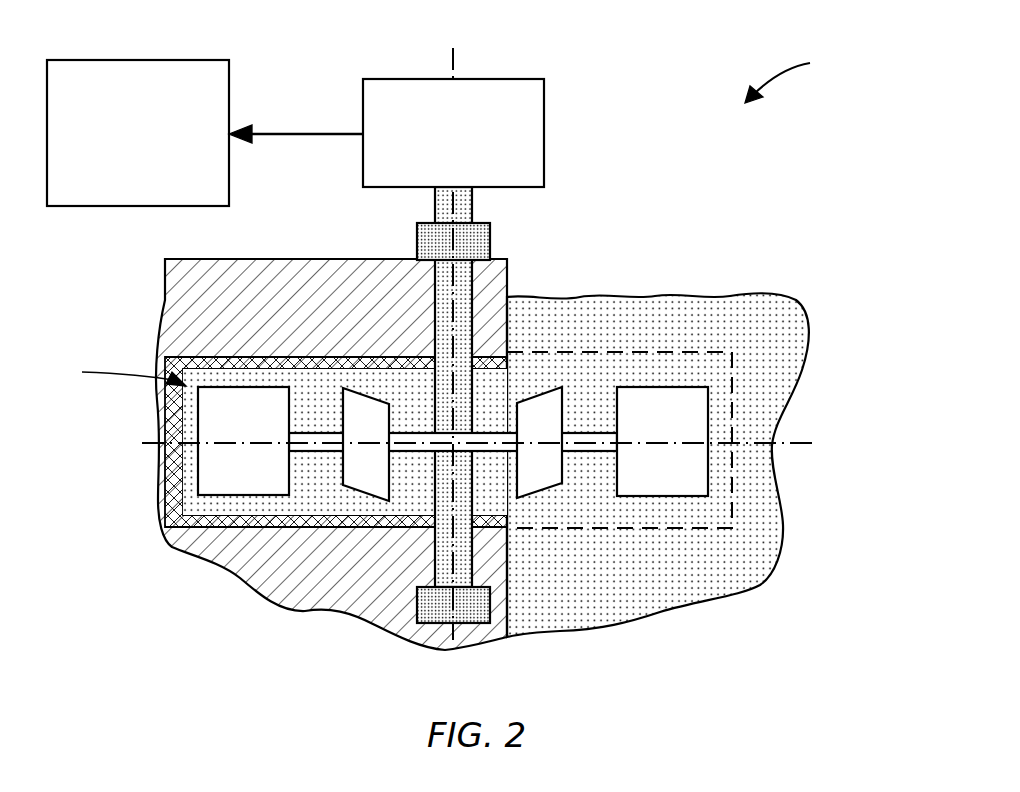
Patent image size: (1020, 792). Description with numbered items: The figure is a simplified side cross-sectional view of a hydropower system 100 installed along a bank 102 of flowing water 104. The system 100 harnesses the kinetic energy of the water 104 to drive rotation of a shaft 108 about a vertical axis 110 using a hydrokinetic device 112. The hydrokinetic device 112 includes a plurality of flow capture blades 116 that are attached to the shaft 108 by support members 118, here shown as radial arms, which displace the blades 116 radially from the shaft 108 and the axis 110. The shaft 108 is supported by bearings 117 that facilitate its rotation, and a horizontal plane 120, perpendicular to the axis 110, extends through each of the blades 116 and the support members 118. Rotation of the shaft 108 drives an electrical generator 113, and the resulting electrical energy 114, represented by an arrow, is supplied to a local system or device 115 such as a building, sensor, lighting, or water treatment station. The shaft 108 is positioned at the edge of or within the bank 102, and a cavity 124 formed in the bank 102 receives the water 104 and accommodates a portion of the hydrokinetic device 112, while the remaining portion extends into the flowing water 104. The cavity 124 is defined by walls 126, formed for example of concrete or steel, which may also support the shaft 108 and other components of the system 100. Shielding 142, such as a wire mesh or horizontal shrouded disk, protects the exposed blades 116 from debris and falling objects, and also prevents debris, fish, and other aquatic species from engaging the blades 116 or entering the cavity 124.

The hydropower system 100 is at (802, 76).
The bank 102 is at (503, 262).
The water 104 is at (767, 295).
The shaft 108 is at (443, 317).
The vertical axis 110 is at (455, 62).
The hydrokinetic device 112 is at (116, 372).
The electrical generator 113 is at (530, 110).
The electrical energy 114 is at (303, 130).
The local system or device 115 is at (90, 59).
The flow capture blades 116 is at (207, 452).
The bearings 117 is at (423, 232).
The support members 118 is at (313, 447).
The horizontal plane 120 is at (807, 442).
The cavity 124 is at (226, 377).
The walls 126 is at (200, 527).
The shielding 142 is at (735, 365).